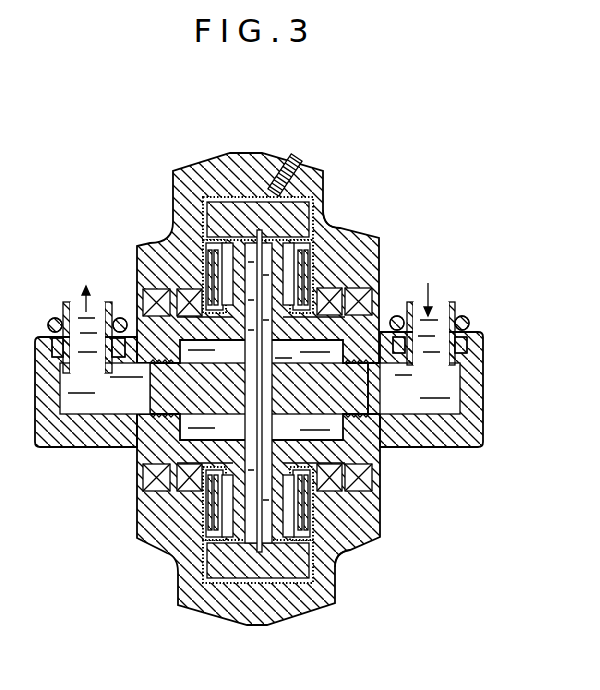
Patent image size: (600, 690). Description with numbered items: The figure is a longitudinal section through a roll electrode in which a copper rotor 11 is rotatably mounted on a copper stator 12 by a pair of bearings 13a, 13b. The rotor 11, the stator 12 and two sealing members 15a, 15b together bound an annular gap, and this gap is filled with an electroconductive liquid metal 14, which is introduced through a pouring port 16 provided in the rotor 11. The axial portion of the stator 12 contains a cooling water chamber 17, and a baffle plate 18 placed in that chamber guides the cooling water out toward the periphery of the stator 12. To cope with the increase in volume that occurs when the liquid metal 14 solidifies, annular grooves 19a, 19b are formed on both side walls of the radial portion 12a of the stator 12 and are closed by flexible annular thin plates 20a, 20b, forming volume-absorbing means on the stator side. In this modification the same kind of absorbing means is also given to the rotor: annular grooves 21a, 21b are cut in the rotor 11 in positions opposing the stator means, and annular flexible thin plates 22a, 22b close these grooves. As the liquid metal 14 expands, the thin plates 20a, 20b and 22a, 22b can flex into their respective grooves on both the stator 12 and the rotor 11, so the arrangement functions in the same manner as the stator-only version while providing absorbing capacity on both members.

The rotor 11 is at (313, 180).
The stator 12 is at (478, 395).
The radial portion of the stator 12a is at (330, 210).
The bearing 13a is at (372, 300).
The bearing 13b is at (150, 300).
The liquid metal 14 is at (227, 197).
The sealing member 15a is at (370, 292).
The sealing member 15b is at (185, 292).
The pouring port 16 is at (284, 170).
The cooling water chamber 17 is at (435, 318).
The baffle plate 18 is at (262, 554).
The annular groove 19a is at (290, 250).
The annular groove 19b is at (225, 248).
The flexible annular thin plate 20a is at (312, 262).
The flexible annular thin plate 20b is at (205, 245).
The annular groove 21a is at (308, 272).
The annular groove 21b is at (209, 262).
The annular flexible thin plate 22a is at (302, 255).
The annular flexible thin plate 22b is at (214, 285).